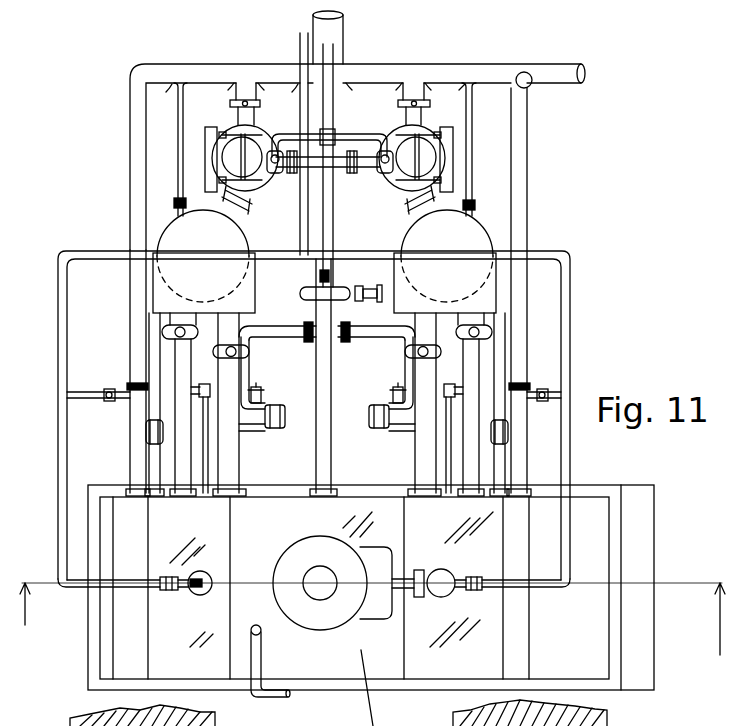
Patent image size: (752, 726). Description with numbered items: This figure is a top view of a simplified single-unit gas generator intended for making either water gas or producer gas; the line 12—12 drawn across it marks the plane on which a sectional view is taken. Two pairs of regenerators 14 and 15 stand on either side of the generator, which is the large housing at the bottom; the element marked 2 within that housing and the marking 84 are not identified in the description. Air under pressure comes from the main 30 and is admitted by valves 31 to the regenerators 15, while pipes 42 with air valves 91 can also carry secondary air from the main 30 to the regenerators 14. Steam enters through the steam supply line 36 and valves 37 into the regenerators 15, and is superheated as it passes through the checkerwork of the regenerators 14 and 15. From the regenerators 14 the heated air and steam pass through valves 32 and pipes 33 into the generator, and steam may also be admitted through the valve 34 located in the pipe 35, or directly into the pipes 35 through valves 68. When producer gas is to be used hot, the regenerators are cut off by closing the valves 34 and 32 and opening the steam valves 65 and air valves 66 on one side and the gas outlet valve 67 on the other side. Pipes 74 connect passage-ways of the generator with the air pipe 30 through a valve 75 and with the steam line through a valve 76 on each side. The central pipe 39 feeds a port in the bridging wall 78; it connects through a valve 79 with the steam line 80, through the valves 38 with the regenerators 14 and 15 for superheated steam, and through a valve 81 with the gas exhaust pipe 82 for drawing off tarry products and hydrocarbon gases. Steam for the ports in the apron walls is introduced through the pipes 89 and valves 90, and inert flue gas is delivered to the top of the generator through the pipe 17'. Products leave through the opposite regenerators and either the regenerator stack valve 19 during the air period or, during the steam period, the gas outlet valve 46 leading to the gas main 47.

The motor 2 is at (320, 600).
The line 12— 12 is at (366, 634).
The regenerator 14 is at (173, 238).
The regenerator 15 is at (235, 128).
The pipe 17' is at (280, 661).
The regenerator stack valve 19 is at (235, 150).
The main air supply pipe line 30 is at (421, 72).
The valve 31 is at (260, 103).
The valve 32 is at (250, 353).
The pipe 33 is at (227, 452).
The valve 34 is at (169, 334).
The pipe 35 is at (177, 355).
The steam supply line 36 is at (327, 133).
The steam valve 37 is at (274, 174).
The valve 38 is at (308, 342).
The pipe 39 is at (331, 417).
The air pipe 42 is at (180, 176).
The gas outlet valve 46 is at (292, 174).
The gas main 47 is at (347, 53).
The steam valve 65 is at (262, 395).
The air valve 66 is at (268, 422).
The gas outlet valve 67 is at (157, 445).
The valve 68 is at (205, 398).
The pipe 74 is at (132, 352).
The valve 75 is at (128, 386).
The valve 76 is at (108, 401).
The bridging wall 78 is at (200, 723).
The valve 79 is at (318, 278).
The steam line 80 is at (333, 230).
The valve 81 is at (358, 292).
The gas exhaust pipe 82 is at (300, 228).
The foundation 84 is at (263, 725).
The pipe 89 is at (78, 588).
The valve 90 is at (172, 592).
The air valve 91 is at (175, 203).